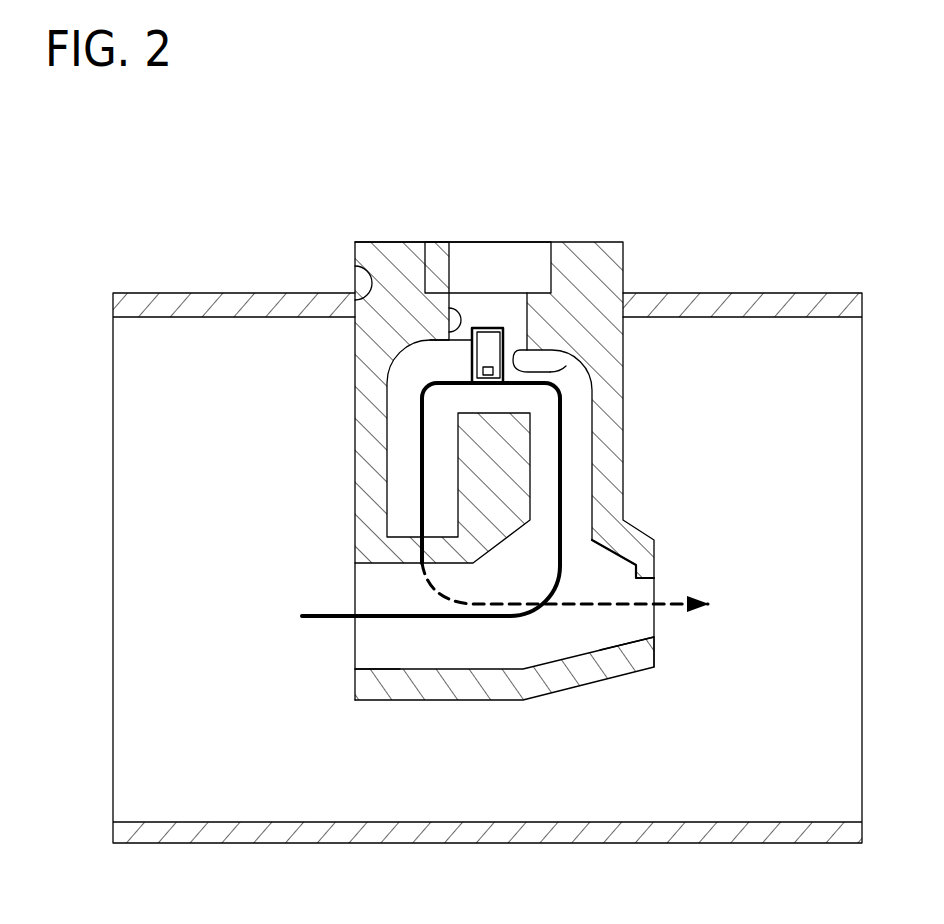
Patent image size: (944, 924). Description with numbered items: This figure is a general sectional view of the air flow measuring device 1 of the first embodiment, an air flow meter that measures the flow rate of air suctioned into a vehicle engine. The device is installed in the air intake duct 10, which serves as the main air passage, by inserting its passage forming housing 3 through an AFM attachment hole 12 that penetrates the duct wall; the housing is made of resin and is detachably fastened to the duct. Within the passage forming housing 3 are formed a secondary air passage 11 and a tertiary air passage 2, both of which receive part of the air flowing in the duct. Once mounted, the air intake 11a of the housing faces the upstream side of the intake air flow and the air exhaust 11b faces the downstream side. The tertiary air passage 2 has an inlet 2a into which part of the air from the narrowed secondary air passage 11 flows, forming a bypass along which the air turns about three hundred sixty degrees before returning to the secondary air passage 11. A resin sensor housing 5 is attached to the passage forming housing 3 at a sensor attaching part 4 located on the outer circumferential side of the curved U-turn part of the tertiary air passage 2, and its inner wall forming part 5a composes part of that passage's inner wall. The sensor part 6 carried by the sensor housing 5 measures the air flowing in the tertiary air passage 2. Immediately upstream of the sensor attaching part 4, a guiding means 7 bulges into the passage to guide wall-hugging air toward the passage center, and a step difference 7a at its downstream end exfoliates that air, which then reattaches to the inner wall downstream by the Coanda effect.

The air flow measuring device 1 is at (598, 221).
The tertiary air passage 2 is at (577, 452).
The inlet 2a is at (617, 552).
The passage forming housing 3 is at (392, 262).
The sensor attaching part 4 is at (447, 327).
The sensor housing 5 is at (483, 265).
The inner wall forming part 5a is at (472, 348).
The sensor part 6 is at (490, 377).
The guiding means 7 is at (540, 354).
The step difference 7a is at (550, 372).
The air intake duct 10 is at (200, 303).
The secondary air passage 11 is at (470, 652).
The air intake 11a is at (380, 650).
The air exhaust 11b is at (635, 623).
The AFM attachment hole 12 is at (355, 258).